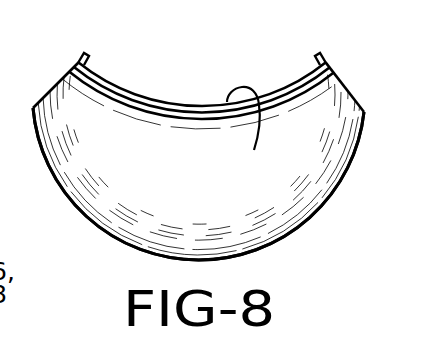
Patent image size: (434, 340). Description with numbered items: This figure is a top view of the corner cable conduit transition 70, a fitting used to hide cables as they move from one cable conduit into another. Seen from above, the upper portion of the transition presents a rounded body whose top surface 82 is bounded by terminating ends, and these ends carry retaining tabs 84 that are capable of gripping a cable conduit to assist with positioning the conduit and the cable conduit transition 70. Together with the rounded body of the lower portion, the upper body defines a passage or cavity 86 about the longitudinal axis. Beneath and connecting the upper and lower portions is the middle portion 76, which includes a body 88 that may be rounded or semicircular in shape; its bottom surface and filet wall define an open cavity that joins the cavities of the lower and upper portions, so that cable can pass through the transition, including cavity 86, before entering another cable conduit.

The corner cable conduit transition 70 is at (166, 59).
The middle portion 76 is at (277, 228).
The top surface 82 is at (200, 118).
The retaining tabs 84 is at (82, 55).
The passage or cavity 86 is at (249, 133).
The body 88 is at (198, 184).